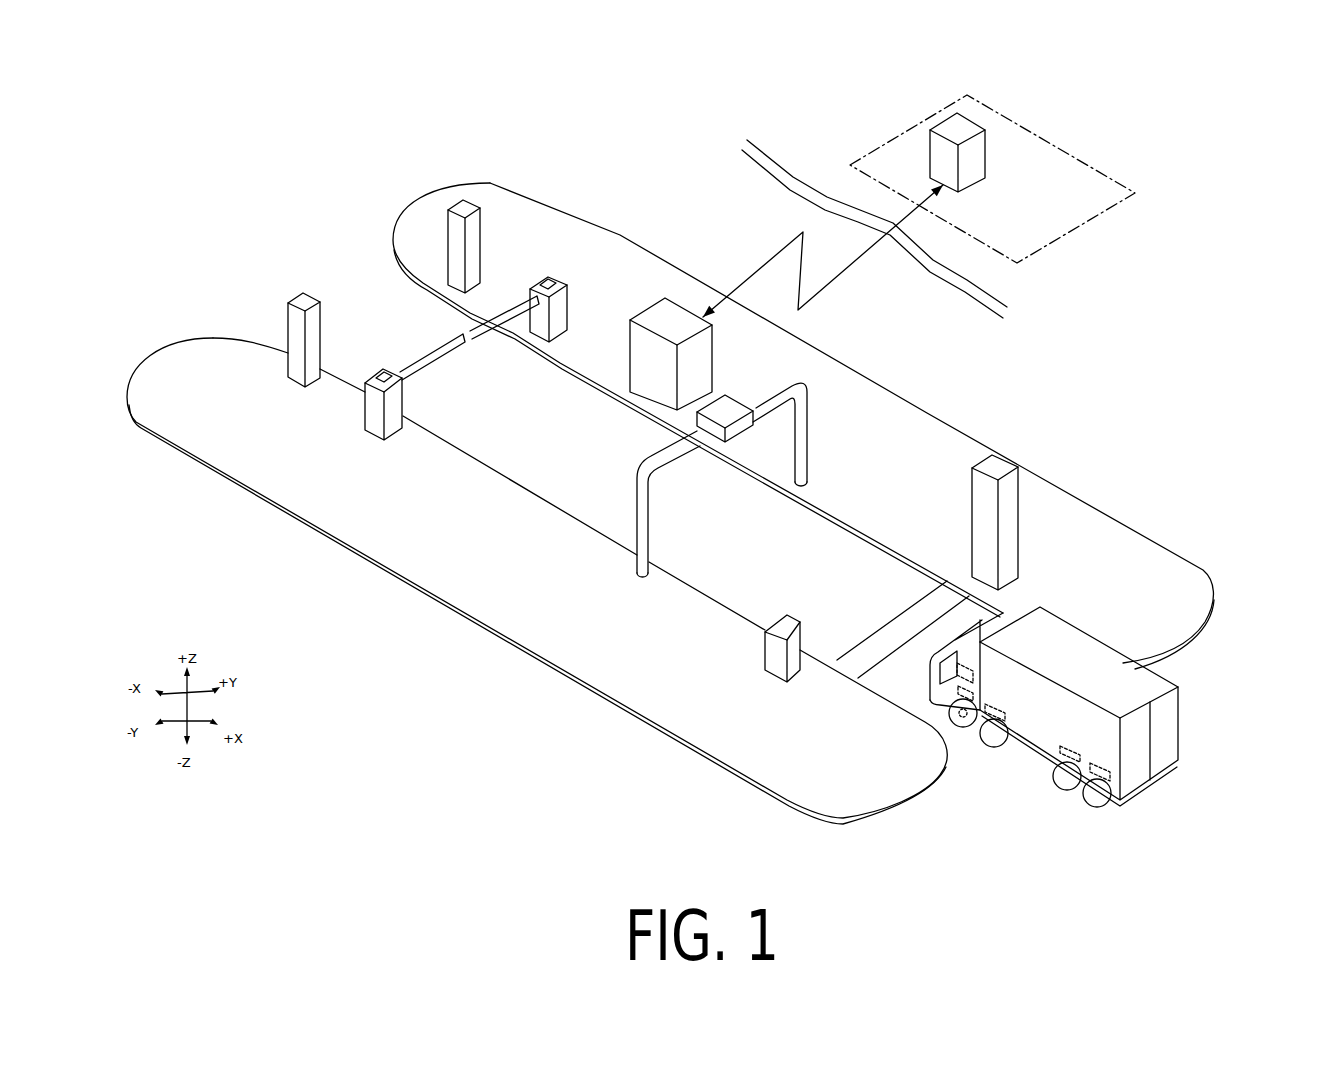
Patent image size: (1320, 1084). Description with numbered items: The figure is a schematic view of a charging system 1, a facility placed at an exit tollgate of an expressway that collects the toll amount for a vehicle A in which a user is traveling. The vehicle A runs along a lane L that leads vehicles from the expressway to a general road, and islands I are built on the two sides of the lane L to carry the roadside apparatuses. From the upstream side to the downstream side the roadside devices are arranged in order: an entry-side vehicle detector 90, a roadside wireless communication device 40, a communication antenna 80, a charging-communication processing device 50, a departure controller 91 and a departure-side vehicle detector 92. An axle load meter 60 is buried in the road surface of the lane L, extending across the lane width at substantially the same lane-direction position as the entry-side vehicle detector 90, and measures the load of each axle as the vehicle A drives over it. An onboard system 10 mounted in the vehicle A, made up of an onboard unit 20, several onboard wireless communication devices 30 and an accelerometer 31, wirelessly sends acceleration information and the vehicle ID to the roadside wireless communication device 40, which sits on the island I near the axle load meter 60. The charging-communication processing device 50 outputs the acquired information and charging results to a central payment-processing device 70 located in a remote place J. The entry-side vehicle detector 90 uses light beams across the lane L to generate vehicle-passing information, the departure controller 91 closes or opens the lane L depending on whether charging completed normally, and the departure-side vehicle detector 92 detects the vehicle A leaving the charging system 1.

The charging system 1 is at (693, 432).
The onboard system 10 is at (1117, 651).
The onboard unit 20 is at (1003, 614).
The onboard wireless communication devices 30 is at (963, 723).
The accelerometer 31 is at (983, 660).
The roadside wireless communication device 40 is at (766, 660).
The charging-communication processing device 50 is at (684, 304).
The axle load meter 60 is at (900, 623).
The central payment-processing device 70 is at (986, 155).
The communication antenna 80 is at (725, 394).
The entry-side vehicle detector 90 is at (1018, 485).
The departure controller 91 is at (558, 272).
The departure-side vehicle detector 92 is at (488, 243).
The vehicle A is at (1103, 651).
The island I is at (1212, 568).
The remote place J is at (1110, 178).
The lane L is at (563, 453).